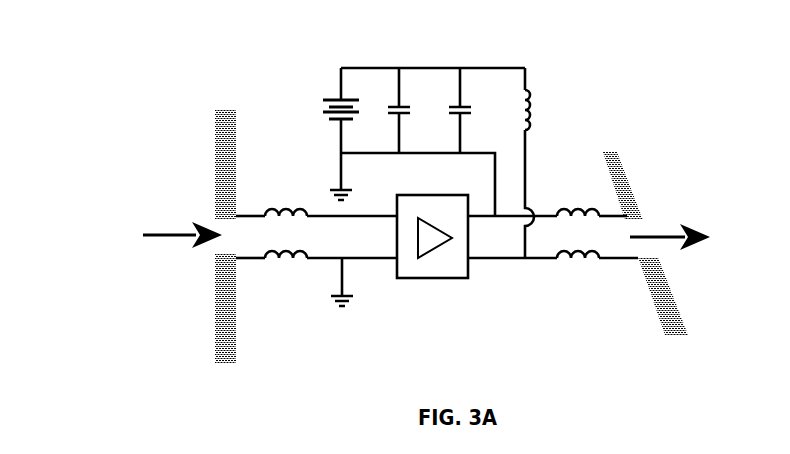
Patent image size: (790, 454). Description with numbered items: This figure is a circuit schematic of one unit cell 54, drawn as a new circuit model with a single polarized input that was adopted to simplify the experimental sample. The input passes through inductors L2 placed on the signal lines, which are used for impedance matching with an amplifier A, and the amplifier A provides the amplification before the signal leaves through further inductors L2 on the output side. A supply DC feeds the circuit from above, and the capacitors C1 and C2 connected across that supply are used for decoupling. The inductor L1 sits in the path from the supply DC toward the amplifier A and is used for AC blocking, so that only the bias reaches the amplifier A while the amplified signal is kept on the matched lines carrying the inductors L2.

The amplifier bias circuit 54 is at (93, 74).
The DC source DC is at (328, 101).
The capacitor C1 is at (414, 110).
The capacitor C2 is at (476, 110).
The inductor L1 is at (542, 99).
The inductors L2 is at (432, 223).
The amplifier A is at (433, 251).